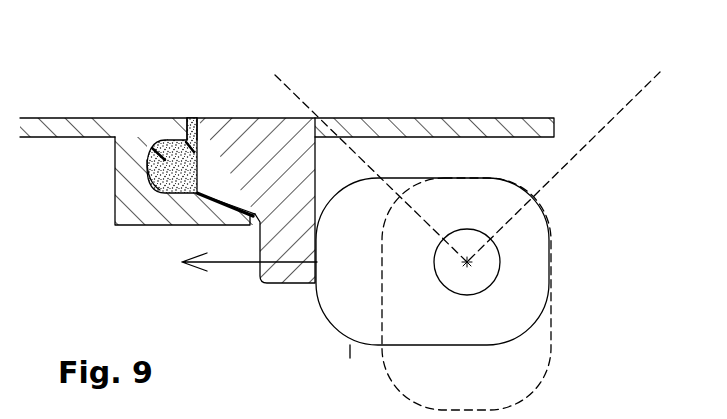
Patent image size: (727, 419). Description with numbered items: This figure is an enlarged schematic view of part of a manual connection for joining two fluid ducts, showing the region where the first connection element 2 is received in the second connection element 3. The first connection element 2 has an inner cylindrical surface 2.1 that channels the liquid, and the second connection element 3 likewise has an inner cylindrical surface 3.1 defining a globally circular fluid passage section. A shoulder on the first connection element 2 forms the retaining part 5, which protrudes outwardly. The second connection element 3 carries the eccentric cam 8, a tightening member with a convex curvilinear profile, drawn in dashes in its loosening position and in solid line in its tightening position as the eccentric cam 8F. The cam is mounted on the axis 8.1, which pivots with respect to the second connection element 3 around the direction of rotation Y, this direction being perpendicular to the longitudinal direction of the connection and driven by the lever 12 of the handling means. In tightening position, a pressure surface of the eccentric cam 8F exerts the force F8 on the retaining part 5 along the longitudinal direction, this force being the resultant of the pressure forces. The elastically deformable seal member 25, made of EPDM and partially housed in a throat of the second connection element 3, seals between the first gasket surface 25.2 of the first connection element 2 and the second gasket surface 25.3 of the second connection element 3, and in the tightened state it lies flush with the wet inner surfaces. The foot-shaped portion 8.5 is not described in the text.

The inner cylindrical surface 3.1 is at (80, 124).
The second connection element 3 is at (122, 197).
The seal member 25 is at (168, 195).
The first gasket surface 25.2 is at (165, 138).
The second gasket surface 25.3 is at (163, 182).
The retaining part 5 is at (324, 178).
The eccentric cam 8 is at (551, 320).
The axis 8.1 is at (490, 257).
The housing foot 8.5 is at (311, 287).
The lever 12 is at (301, 100).
The inner cylindrical surface 2.1 is at (441, 119).
The first connection element 2 is at (526, 150).
The force F8 is at (232, 264).
The eccentric cam in tightening position 8F is at (350, 358).
The direction of rotation Y is at (472, 268).